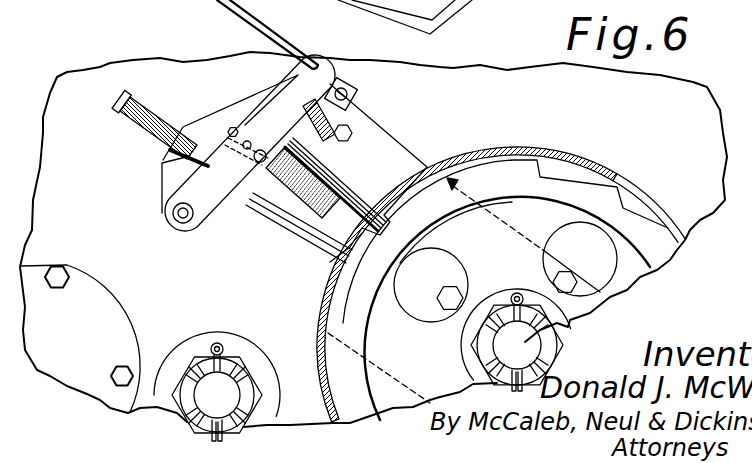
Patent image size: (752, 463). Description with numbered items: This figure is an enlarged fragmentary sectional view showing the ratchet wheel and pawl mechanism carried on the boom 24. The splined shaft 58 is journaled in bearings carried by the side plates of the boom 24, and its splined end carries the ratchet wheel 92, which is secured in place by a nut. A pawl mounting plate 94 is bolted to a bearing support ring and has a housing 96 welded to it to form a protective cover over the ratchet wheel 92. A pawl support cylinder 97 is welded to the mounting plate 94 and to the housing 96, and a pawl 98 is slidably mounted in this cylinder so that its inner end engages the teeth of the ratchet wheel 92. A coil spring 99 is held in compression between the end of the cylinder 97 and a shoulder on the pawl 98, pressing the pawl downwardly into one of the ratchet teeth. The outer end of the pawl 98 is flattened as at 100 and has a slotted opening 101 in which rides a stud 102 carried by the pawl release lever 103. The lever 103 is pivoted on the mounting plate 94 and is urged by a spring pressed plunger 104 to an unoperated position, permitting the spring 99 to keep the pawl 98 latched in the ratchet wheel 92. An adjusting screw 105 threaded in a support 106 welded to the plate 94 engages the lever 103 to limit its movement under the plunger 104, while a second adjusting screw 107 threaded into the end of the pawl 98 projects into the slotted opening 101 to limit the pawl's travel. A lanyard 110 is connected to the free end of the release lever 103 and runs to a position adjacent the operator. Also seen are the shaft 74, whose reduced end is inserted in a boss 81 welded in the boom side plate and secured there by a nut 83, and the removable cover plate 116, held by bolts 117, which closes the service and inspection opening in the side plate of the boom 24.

The boom 24 is at (471, 84).
The shaft 58 is at (530, 347).
The shaft 74 is at (228, 386).
The boss 81 is at (198, 340).
The nut 83 is at (197, 367).
The ratchet wheel 92 is at (612, 195).
The pawl mounting plate 94 is at (396, 133).
The housing 96 is at (574, 153).
The pawl support cylinder 97 is at (339, 170).
The pawl 98 is at (364, 192).
The coil spring 99 is at (302, 208).
The flattened end of pawl 100 is at (245, 126).
The slotted opening 101 is at (257, 162).
The stud 102 is at (242, 143).
The pawl release lever 103 is at (196, 188).
The spring pressed plunger 104 is at (180, 163).
The adjusting screw 105 is at (351, 120).
The support 106 is at (339, 85).
The second adjusting screw 107 is at (229, 128).
The lanyard 110 is at (263, 33).
The cover plate 116 is at (96, 310).
The bolts 117 is at (63, 269).